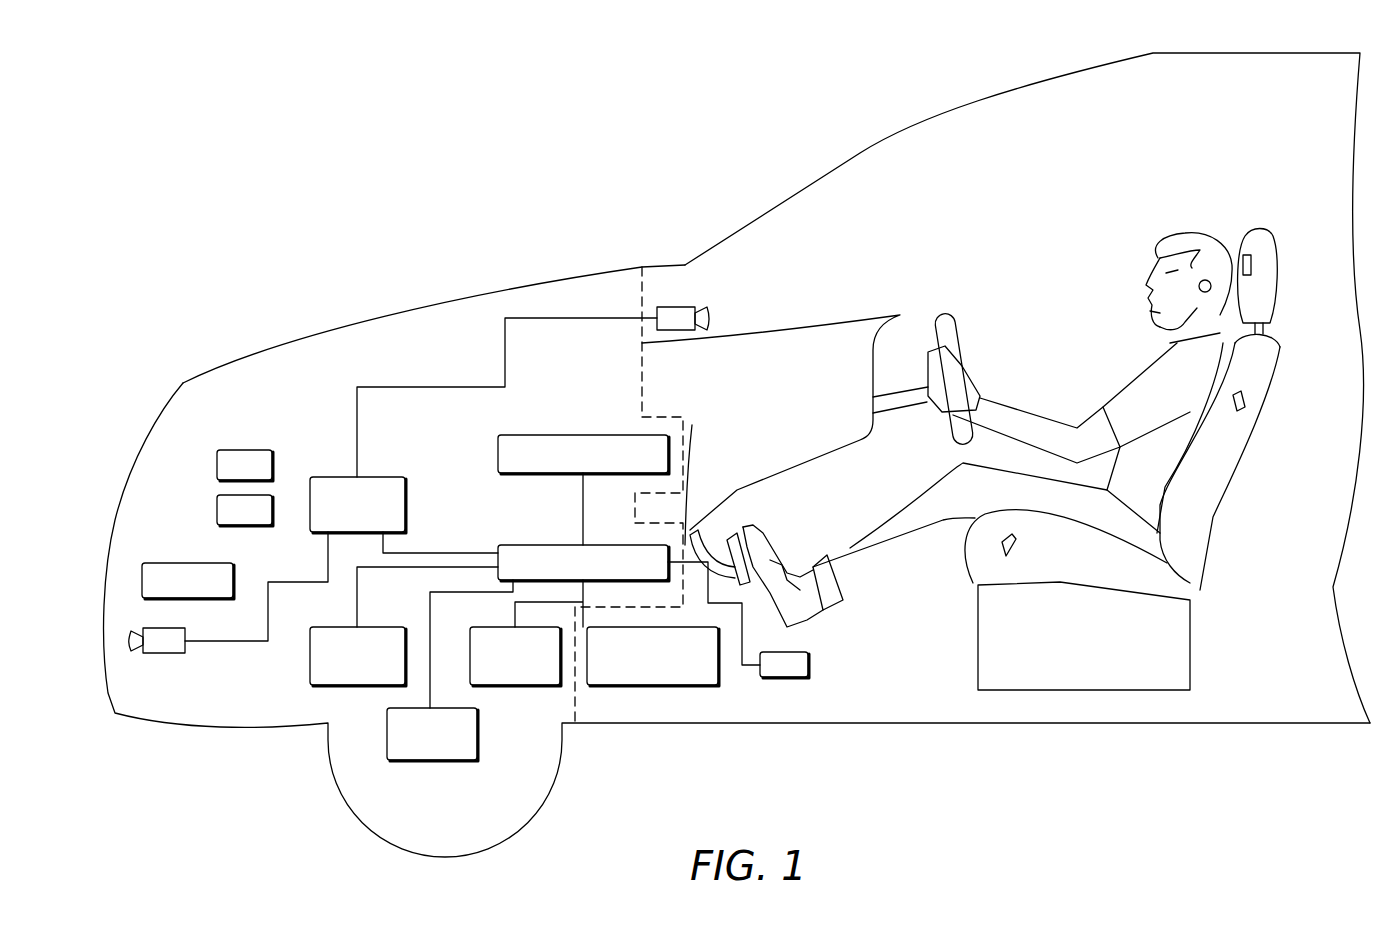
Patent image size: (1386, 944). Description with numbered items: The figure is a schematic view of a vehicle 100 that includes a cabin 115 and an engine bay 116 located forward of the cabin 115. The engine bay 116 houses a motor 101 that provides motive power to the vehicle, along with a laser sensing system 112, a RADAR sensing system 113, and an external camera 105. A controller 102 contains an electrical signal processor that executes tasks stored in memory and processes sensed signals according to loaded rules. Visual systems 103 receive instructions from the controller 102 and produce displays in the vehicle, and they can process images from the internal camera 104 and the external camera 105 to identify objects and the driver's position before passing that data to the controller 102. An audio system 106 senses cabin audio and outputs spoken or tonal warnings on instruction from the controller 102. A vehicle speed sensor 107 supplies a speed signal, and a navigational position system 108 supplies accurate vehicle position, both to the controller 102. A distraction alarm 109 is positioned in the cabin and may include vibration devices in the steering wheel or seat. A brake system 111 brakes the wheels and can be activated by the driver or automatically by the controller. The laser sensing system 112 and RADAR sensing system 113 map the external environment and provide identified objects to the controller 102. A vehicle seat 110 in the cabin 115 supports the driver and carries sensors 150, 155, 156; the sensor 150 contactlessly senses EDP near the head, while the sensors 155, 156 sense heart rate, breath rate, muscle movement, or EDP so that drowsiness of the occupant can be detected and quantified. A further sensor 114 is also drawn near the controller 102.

The vehicle 100 is at (410, 167).
The motor 101 is at (185, 562).
The controller 102 is at (543, 545).
The visual systems 103 is at (344, 477).
The internal camera 104 is at (665, 307).
The external camera 105 is at (160, 628).
The audio system 106 is at (344, 627).
The vehicle speed sensor 107 is at (500, 627).
The navigational position system 108 is at (548, 435).
The distraction alarm 109 is at (660, 686).
The vehicle seat 110 is at (1233, 512).
The brake system 111 is at (432, 761).
The laser sensing system 112 is at (240, 449).
The RADAR sensing system 113 is at (216, 510).
The vehicle sensor 114 is at (785, 678).
The cabin 115 is at (1074, 186).
The engine bay 116 is at (587, 272).
The sensor 150 is at (1251, 265).
The sensor 155 is at (1245, 402).
The sensor 156 is at (977, 580).